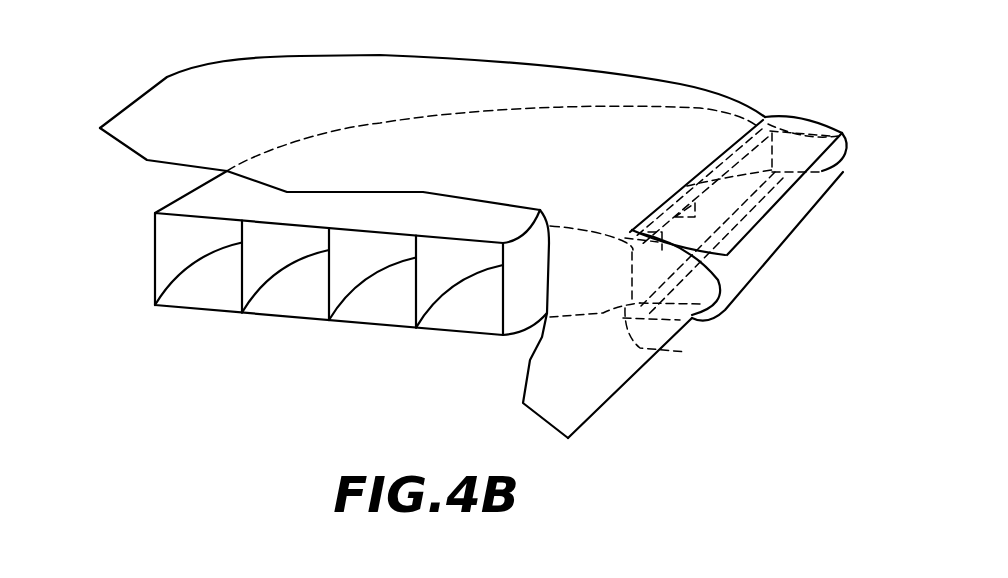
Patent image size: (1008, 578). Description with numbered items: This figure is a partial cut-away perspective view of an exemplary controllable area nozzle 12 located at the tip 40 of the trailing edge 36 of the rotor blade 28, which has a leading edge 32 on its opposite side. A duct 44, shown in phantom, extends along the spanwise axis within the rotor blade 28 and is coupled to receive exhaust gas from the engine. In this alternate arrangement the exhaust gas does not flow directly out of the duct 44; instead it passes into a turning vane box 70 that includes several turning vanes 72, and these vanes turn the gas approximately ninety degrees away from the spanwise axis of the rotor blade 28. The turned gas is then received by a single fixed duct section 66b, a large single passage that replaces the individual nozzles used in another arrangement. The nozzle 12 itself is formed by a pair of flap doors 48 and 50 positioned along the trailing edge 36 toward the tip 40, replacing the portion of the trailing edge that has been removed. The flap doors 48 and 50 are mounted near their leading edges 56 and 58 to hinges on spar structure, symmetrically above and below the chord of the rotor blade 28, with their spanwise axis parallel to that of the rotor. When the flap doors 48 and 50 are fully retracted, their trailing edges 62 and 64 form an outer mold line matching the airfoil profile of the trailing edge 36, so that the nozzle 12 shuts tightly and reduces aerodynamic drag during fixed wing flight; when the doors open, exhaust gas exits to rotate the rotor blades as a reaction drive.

The controllable area nozzle 12 is at (837, 323).
The rotor blade 28 is at (266, 432).
The leading edge 32 is at (104, 100).
The trailing edge 36 is at (614, 413).
The tip 40 is at (514, 49).
The duct 44 is at (201, 362).
The flap door 48 is at (814, 109).
The flap door 50 is at (809, 241).
The leading edge 56 is at (765, 117).
The leading edge 58 is at (669, 301).
The trailing edge 62 is at (843, 133).
The trailing edge 64 is at (822, 172).
The single fixed duct section 66b is at (597, 292).
The turning vane box 70 is at (586, 124).
The turning vanes 72 is at (209, 288).